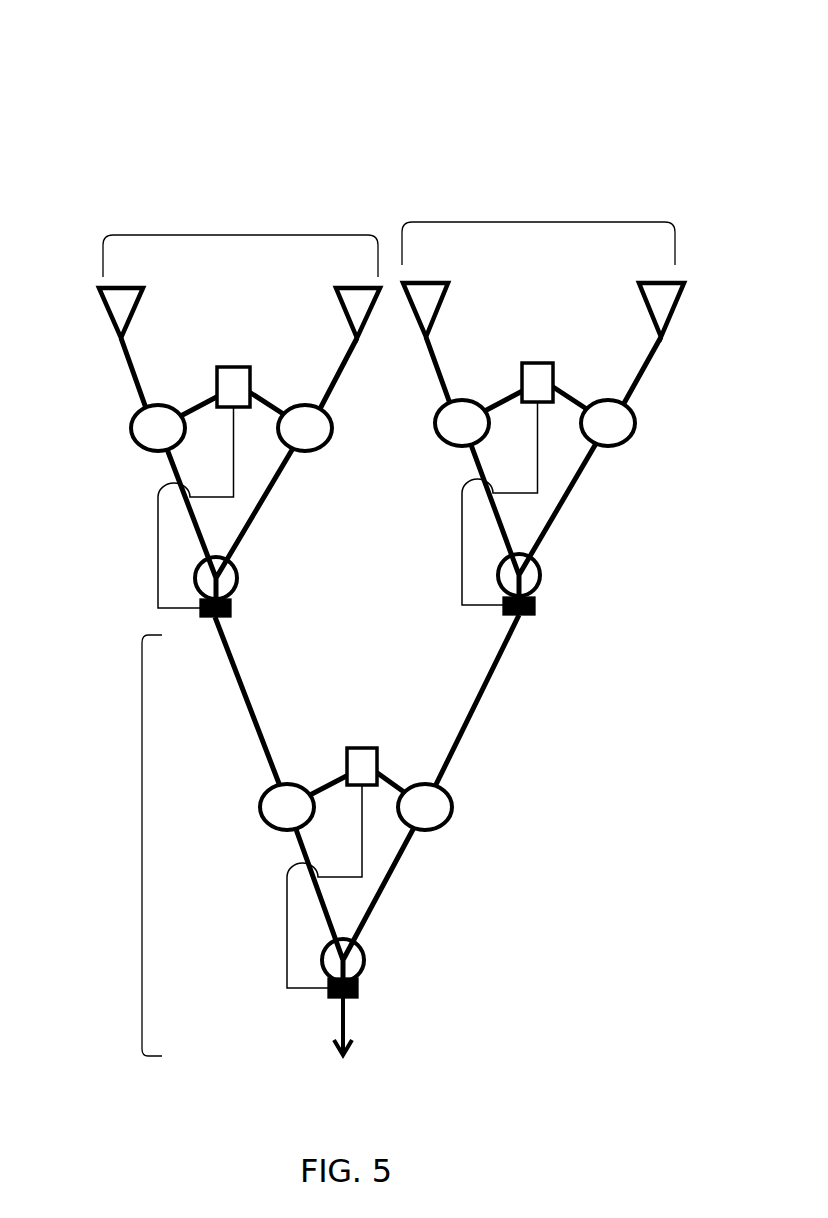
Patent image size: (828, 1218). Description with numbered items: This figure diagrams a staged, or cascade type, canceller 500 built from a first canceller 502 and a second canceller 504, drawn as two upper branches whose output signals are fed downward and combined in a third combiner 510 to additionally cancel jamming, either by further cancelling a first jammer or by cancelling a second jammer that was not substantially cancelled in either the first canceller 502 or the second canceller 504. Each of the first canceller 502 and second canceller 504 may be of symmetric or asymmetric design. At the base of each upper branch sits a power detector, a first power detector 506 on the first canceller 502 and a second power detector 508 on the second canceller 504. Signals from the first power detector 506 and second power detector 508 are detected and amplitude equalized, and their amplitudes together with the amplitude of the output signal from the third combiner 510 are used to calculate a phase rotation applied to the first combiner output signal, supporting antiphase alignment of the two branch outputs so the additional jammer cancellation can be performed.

The canceller 500 is at (365, 150).
The first canceller 502 is at (238, 235).
The second canceller 504 is at (563, 222).
The first power detector 506 is at (231, 607).
The second power detector 508 is at (503, 612).
The third combiner 510 is at (142, 843).